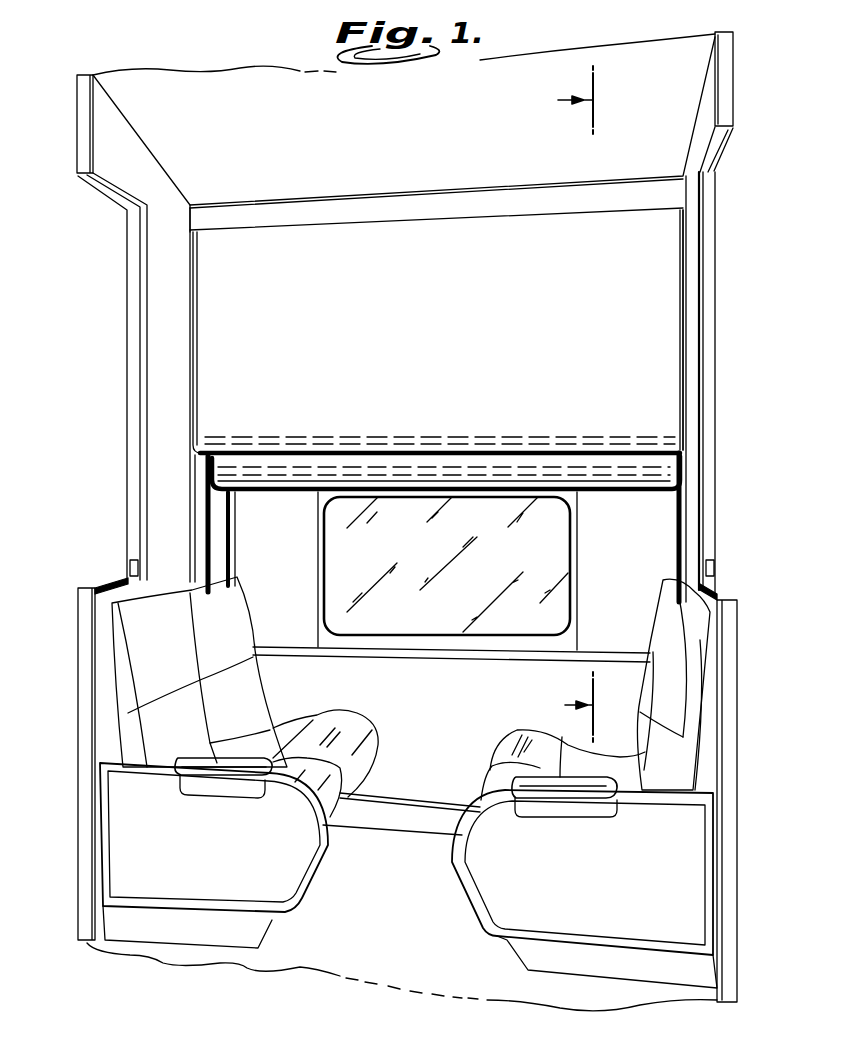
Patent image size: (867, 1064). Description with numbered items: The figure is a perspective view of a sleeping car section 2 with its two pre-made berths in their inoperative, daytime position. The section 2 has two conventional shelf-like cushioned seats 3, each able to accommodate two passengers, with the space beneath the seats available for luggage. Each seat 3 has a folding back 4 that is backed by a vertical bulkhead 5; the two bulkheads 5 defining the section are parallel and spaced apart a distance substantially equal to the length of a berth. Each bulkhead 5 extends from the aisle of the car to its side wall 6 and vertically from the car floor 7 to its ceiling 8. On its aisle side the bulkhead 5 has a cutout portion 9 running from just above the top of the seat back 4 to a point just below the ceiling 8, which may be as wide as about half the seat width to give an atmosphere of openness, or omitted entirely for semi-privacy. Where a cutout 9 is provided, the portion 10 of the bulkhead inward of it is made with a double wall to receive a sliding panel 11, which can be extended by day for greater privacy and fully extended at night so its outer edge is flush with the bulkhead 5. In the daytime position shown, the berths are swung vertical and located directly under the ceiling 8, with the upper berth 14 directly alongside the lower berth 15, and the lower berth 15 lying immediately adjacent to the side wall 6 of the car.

The sleeping car section 2 is at (349, 1009).
The cushioned seat 3 is at (308, 720).
The folding back 4 is at (246, 627).
The bulkhead 5 is at (74, 622).
The side wall 6 is at (630, 549).
The car floor 7 is at (385, 897).
The ceiling 8 is at (397, 126).
The cutout portion 9 is at (110, 385).
The portion of the bulkhead 10 is at (170, 460).
The sliding panel 11 is at (135, 520).
The upper berth 14 is at (476, 346).
The lower berth 15 is at (590, 463).